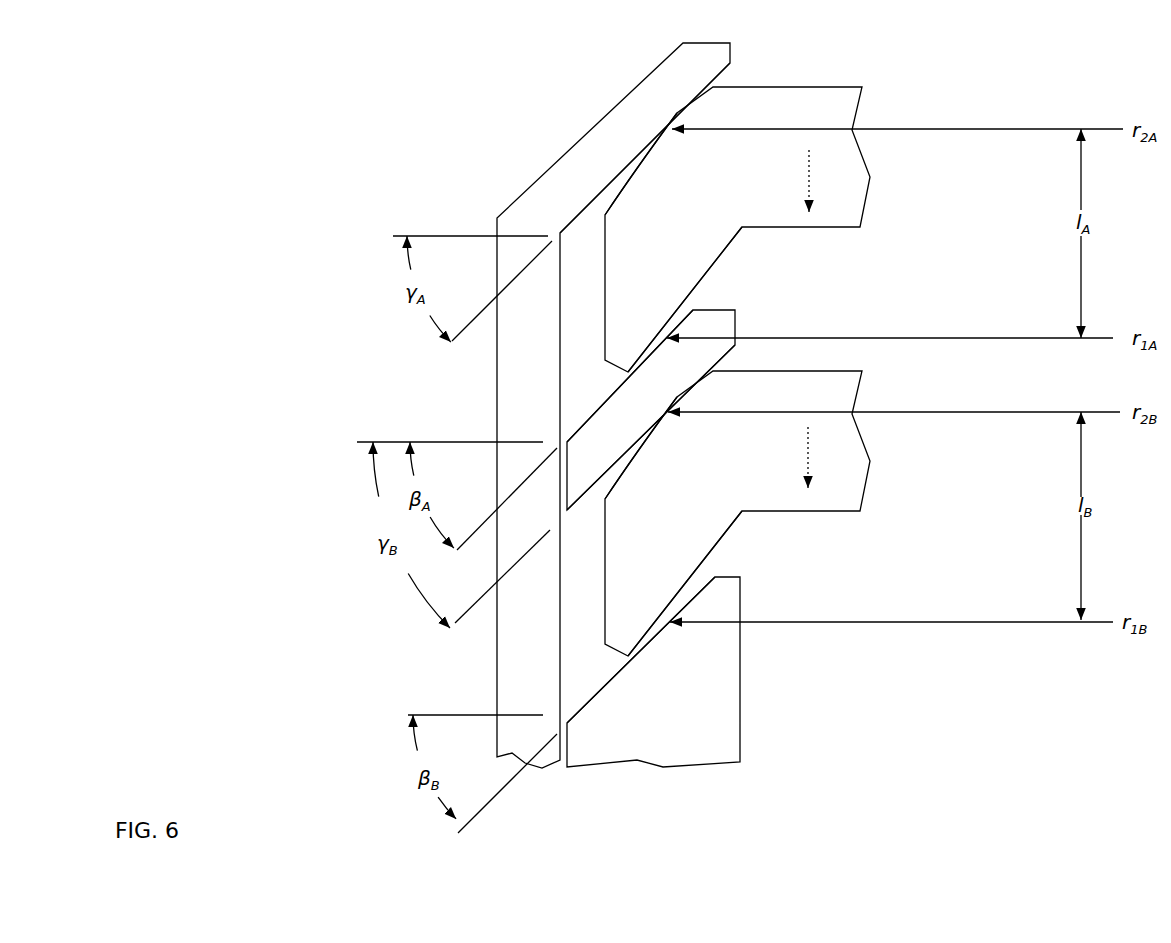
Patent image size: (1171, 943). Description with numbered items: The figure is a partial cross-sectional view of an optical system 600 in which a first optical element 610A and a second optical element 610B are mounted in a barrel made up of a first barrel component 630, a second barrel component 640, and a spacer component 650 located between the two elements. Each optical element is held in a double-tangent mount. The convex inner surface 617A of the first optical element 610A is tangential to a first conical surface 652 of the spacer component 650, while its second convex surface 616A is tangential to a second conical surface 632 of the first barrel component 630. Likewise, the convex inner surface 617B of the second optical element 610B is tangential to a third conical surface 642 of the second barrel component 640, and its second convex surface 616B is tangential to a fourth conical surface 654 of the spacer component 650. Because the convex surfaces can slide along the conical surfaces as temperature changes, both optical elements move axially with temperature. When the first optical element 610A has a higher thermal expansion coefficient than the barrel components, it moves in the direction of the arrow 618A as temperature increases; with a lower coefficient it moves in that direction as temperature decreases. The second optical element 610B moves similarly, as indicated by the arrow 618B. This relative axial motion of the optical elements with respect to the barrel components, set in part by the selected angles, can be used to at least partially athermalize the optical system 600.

The optical system 600 is at (328, 65).
The first barrel component 630 is at (597, 120).
The second conical surface 632 is at (680, 112).
The first optical element 610A is at (812, 88).
The second convex surface 616A is at (636, 170).
The convex inner surface 617A is at (710, 275).
The arrow 618A is at (810, 175).
The spacer component 650 is at (740, 317).
The first conical surface 652 is at (599, 401).
The fourth conical surface 654 is at (612, 456).
The second optical element 610B is at (812, 371).
The second convex surface 616B is at (636, 457).
The convex inner surface 617B is at (708, 559).
The arrow 618B is at (810, 459).
The second barrel component 640 is at (663, 767).
The third conical surface 642 is at (604, 686).